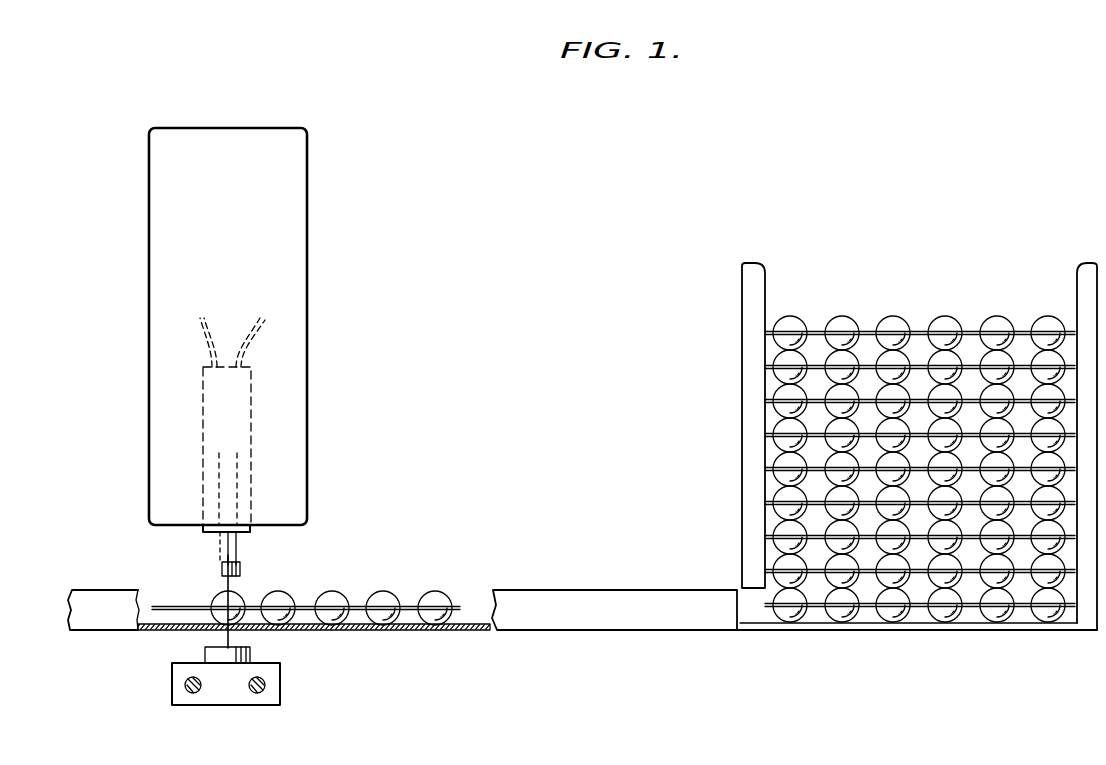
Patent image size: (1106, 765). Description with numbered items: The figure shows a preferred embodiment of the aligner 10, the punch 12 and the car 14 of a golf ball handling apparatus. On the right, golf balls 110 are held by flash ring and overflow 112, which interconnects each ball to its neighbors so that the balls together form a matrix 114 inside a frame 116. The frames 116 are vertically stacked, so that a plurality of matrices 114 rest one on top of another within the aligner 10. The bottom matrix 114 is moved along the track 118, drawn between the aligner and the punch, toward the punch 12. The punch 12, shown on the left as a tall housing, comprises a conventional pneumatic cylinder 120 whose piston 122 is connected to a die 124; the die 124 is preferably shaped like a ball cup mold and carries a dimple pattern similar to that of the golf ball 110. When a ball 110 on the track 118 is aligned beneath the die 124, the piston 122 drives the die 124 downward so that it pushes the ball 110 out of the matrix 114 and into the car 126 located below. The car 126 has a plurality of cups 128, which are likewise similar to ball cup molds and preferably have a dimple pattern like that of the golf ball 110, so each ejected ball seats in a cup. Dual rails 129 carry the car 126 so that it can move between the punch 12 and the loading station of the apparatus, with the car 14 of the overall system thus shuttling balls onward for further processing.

The aligner 10 is at (869, 429).
The punch 12 is at (138, 220).
The car 14 is at (218, 693).
The balls 110 is at (332, 593).
The flash ring and overflow 112 is at (408, 605).
The matrix 114 is at (958, 289).
The frame 116 is at (752, 266).
The track 118 is at (619, 597).
The pneumatic cylinder 120 is at (251, 398).
The piston 122 is at (222, 548).
The die 124 is at (240, 571).
The car 126 is at (278, 690).
The cups 128 is at (252, 660).
The dual rails 129 is at (258, 694).